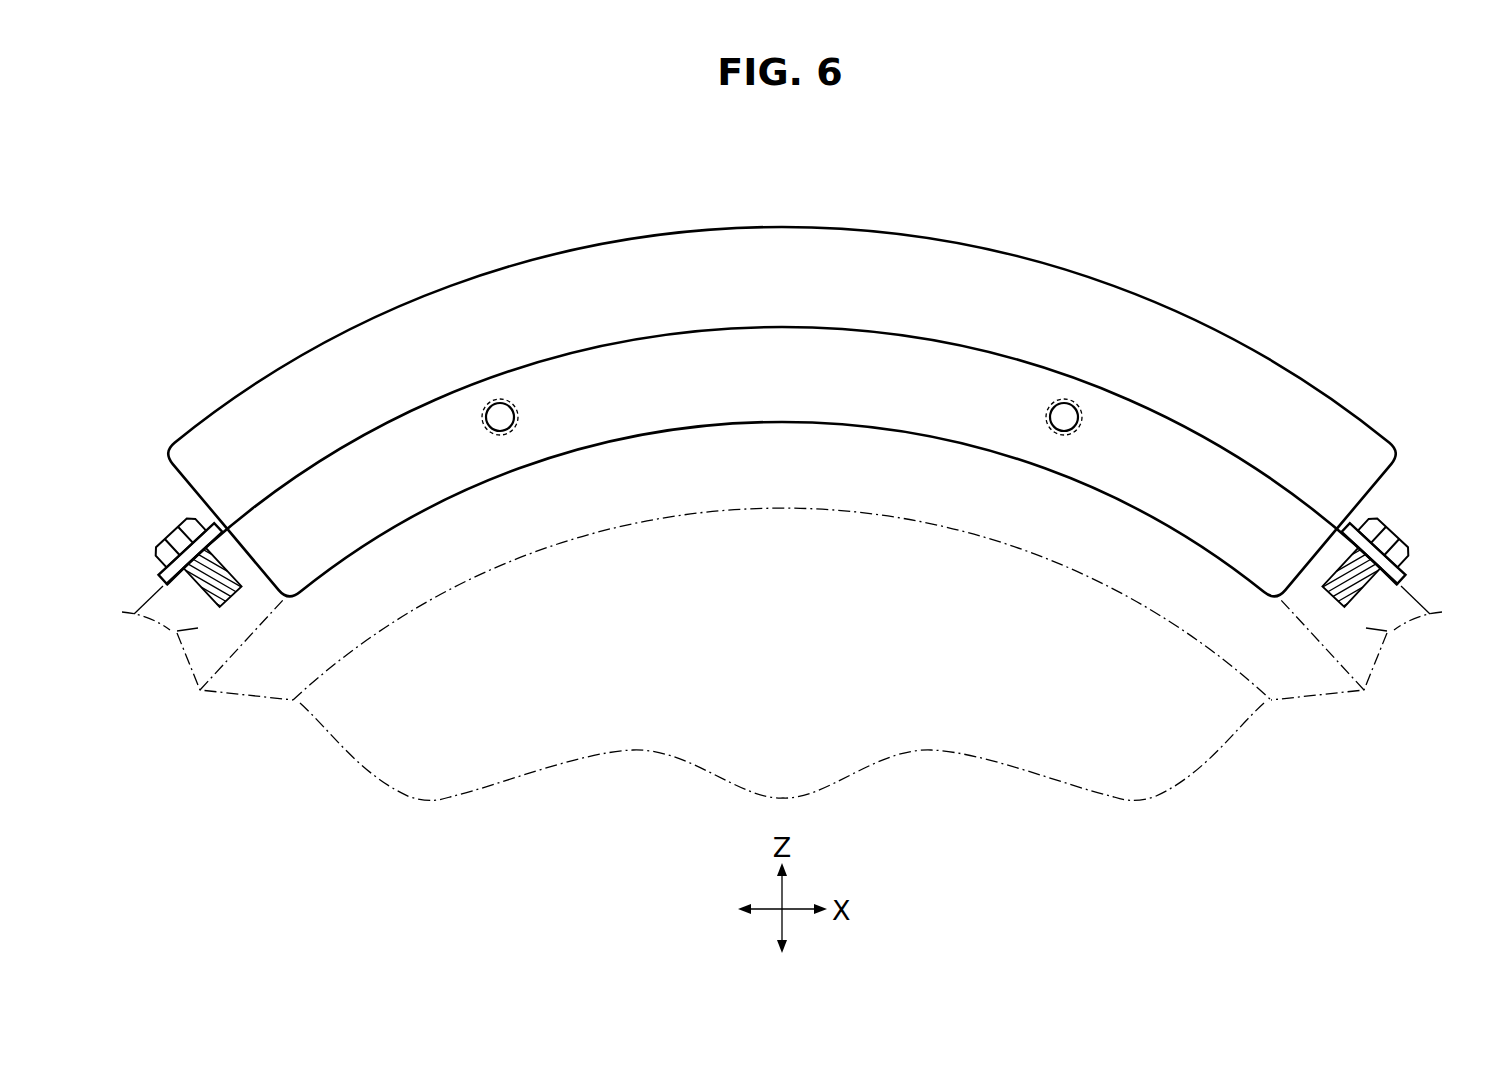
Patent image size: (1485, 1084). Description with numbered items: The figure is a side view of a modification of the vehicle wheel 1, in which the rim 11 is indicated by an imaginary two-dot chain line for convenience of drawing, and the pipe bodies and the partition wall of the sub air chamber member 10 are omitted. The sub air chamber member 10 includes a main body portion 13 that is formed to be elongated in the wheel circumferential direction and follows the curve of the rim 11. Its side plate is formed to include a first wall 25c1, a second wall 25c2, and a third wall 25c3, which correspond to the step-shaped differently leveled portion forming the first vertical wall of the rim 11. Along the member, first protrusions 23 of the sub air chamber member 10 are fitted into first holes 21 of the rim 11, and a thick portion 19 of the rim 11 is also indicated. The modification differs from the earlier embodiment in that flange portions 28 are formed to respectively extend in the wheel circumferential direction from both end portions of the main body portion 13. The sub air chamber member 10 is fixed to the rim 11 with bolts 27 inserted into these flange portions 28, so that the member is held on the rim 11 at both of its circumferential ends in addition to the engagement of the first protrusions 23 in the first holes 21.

The vehicle wheel 1 is at (697, 197).
The sub air chamber member 10 is at (781, 346).
The main body portion 13 is at (781, 346).
The first wall 25c1 is at (400, 470).
The second wall 25c2 is at (779, 340).
The third wall 25c3 is at (1250, 387).
The first hole 21 is at (513, 406).
The first protrusion 23 is at (484, 414).
The bolt 27 is at (172, 533).
The flange portion 28 is at (158, 578).
The thick portion 19 is at (172, 630).
The rim 11 is at (1398, 632).